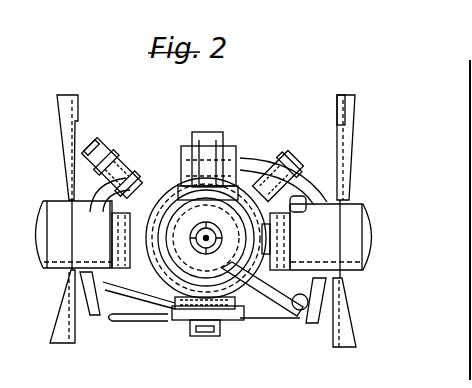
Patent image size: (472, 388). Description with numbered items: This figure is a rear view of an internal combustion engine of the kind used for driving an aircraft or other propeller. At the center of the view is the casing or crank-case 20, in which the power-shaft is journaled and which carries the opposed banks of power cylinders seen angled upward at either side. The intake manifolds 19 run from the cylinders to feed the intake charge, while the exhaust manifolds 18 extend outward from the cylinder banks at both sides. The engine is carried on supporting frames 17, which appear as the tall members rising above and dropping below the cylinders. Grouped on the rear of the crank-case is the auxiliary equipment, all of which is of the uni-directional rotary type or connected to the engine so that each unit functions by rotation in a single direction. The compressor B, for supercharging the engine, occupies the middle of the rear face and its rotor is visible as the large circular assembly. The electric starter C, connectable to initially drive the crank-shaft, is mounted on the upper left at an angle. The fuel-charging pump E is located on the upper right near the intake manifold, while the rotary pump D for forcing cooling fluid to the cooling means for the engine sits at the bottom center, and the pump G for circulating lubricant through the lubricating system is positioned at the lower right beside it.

The supporting frames 17 is at (60, 93).
The exhaust manifolds 18 is at (375, 250).
The intake manifolds 19 is at (322, 192).
The crank-case 20 is at (282, 238).
The compressor B is at (206, 238).
The electric starter C is at (111, 173).
The rotary pump D is at (190, 338).
The fuel-charging pump E is at (270, 163).
The pump G is at (228, 338).